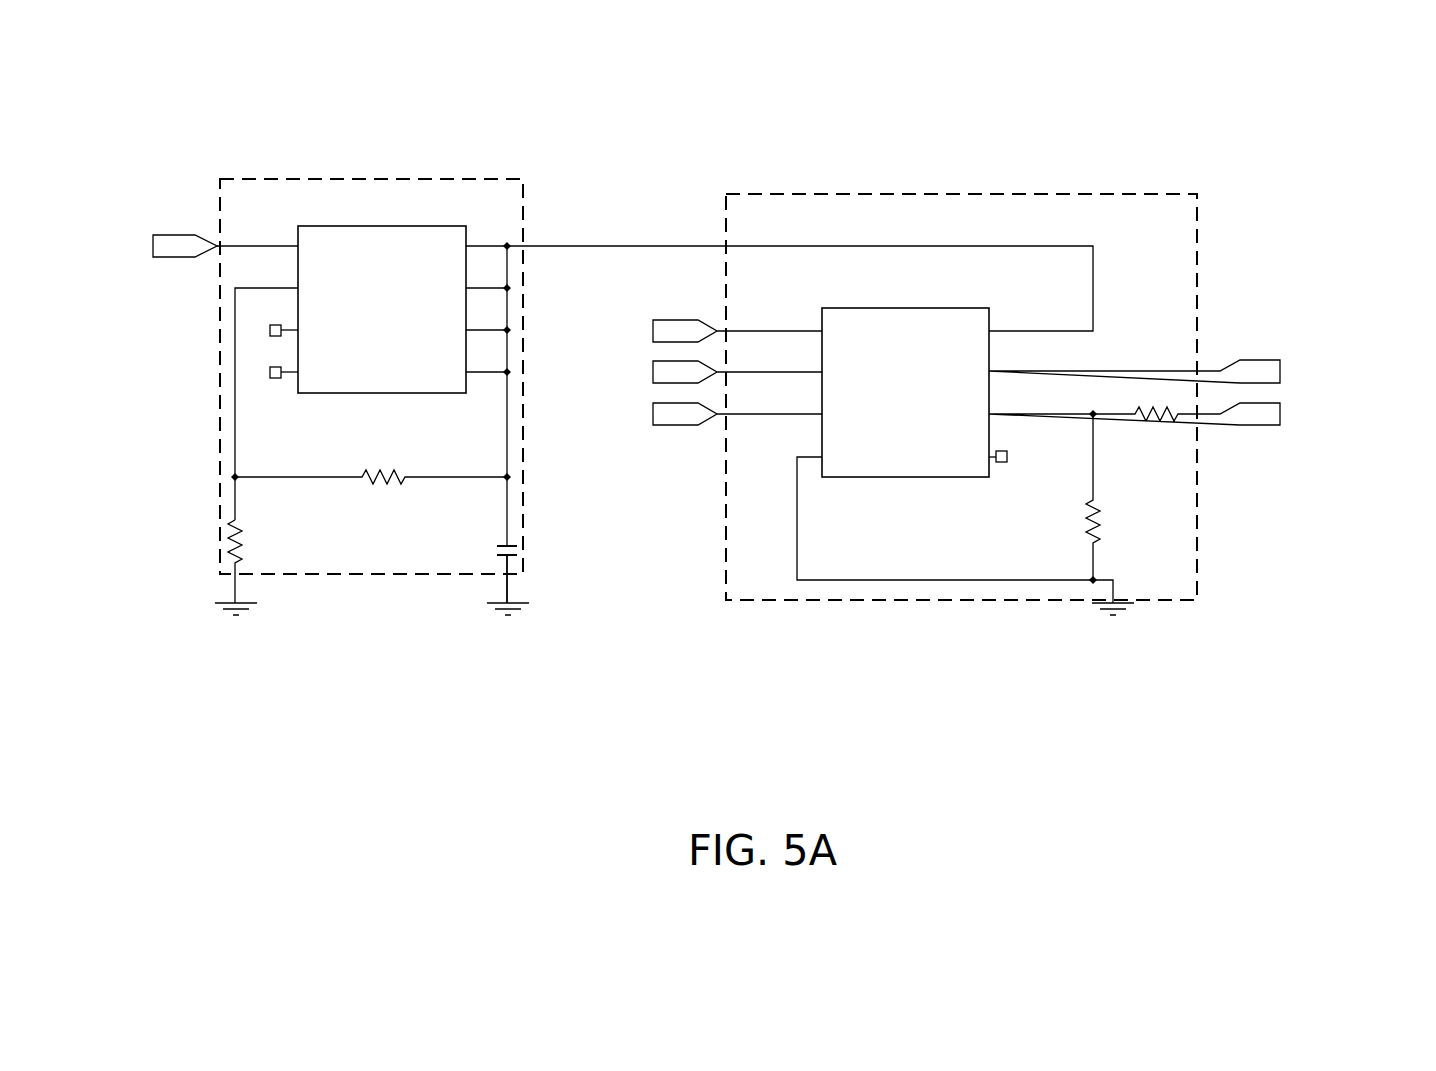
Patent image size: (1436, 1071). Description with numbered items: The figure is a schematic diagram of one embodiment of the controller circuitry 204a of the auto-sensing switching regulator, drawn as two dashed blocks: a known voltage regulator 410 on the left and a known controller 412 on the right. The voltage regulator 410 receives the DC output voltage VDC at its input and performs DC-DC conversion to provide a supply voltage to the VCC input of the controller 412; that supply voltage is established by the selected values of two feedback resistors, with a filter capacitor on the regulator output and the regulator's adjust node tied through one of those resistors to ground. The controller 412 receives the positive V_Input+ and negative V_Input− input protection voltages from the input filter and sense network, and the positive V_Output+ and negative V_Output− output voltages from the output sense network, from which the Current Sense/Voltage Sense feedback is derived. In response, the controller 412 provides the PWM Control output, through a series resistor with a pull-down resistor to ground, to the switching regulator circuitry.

The controller circuitry 204a is at (588, 86).
The voltage regulator 410 is at (320, 178).
The controller 412 is at (860, 194).